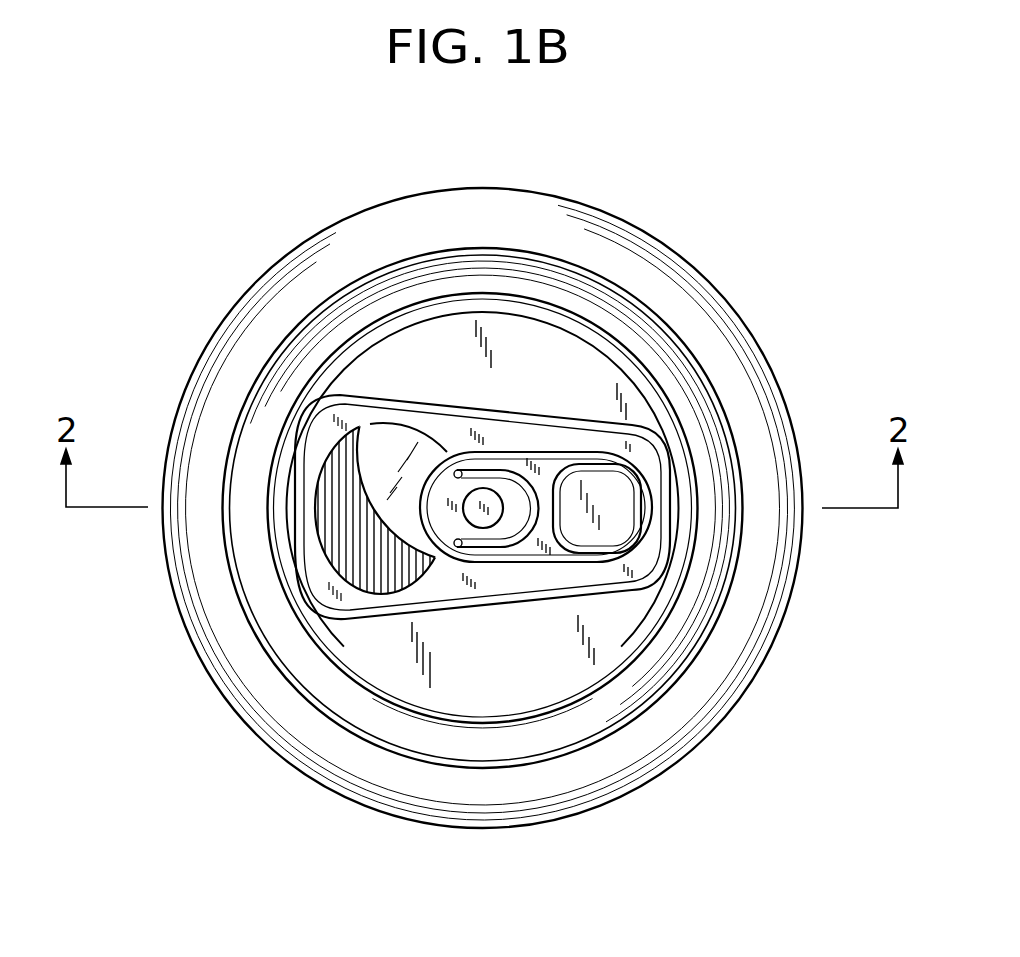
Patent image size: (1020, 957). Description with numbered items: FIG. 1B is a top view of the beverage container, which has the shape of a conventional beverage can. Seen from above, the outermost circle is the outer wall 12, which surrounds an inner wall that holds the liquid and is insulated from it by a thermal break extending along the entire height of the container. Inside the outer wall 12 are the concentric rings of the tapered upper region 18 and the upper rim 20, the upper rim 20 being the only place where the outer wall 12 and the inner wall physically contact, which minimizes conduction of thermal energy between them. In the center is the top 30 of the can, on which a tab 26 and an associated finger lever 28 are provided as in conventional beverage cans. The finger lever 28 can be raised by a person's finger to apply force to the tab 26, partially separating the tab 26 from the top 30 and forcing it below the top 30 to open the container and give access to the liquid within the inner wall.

The outer wall 12 is at (627, 220).
The tapered upper region 18 is at (245, 342).
The upper rim 20 is at (713, 365).
The tab 26 is at (397, 440).
The finger lever 28 is at (590, 458).
The top 30 is at (460, 358).